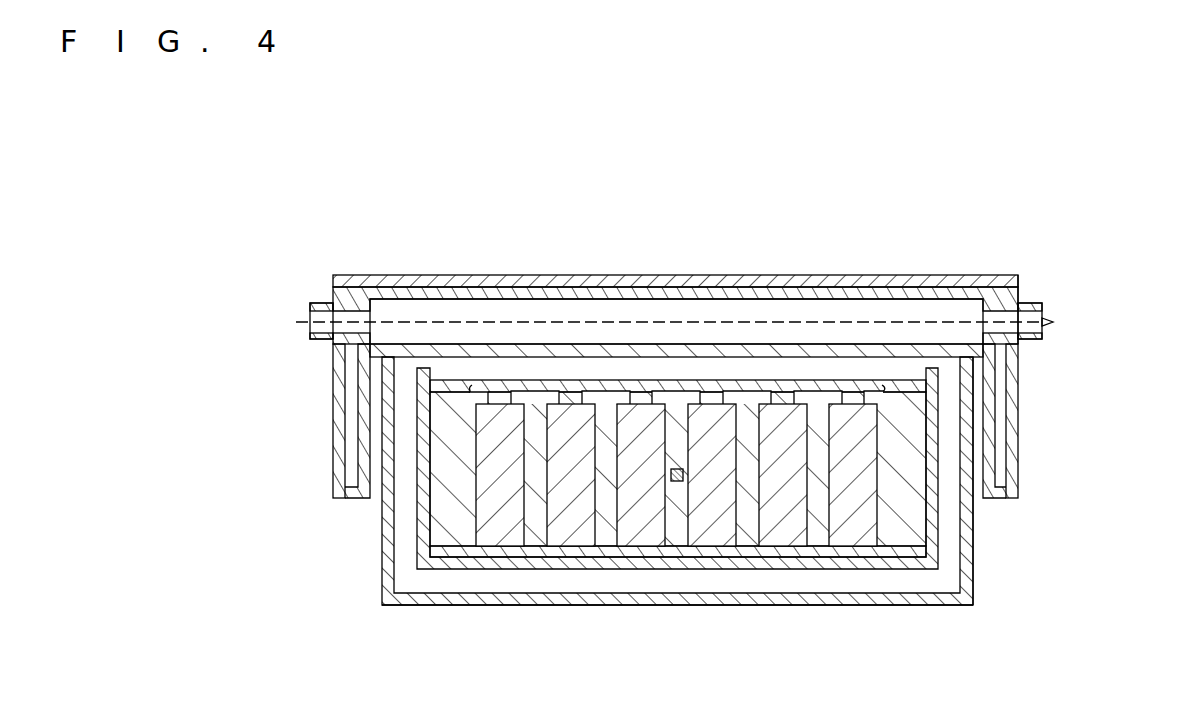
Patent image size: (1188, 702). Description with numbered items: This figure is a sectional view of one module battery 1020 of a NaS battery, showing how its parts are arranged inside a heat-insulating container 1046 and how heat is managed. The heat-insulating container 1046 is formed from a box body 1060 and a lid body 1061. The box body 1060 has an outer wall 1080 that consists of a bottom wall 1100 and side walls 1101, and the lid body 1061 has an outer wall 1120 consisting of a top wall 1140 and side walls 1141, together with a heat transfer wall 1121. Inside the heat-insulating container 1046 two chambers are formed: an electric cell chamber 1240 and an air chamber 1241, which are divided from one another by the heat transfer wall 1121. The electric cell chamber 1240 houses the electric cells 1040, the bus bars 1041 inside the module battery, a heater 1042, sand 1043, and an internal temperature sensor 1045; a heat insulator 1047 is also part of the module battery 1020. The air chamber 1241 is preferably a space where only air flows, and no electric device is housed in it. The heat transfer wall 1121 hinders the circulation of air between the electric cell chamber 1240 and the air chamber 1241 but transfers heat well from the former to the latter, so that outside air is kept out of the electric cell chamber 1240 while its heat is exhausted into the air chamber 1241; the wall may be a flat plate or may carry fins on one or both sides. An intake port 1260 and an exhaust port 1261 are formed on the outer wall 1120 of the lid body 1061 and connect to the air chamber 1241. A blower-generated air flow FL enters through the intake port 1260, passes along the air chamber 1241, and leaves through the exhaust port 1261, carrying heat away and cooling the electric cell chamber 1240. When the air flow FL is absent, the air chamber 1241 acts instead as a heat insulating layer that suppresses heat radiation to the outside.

The module battery 1020 is at (1020, 225).
The outer wall 1120 is at (222, 171).
The top wall 1140 is at (392, 283).
The side walls 1141 is at (333, 410).
The electric cell chamber 1240 is at (438, 363).
The air chamber 1241 is at (508, 308).
The heat transfer wall 1121 is at (593, 345).
The air flow FL is at (775, 318).
The intake port 1260 is at (313, 303).
The exhaust port 1261 is at (1028, 338).
The heat insulator 1047 is at (1018, 278).
The heat-insulating container 1046 is at (223, 463).
The lid body 1061 is at (333, 478).
The box body 1060 is at (382, 547).
The outer wall 1080 is at (1082, 607).
The side walls 1101 is at (972, 582).
The bottom wall 1100 is at (923, 605).
The heater 1042 is at (915, 543).
The sand 1043 is at (848, 380).
The bus bars 1041 is at (665, 393).
The electric cells 1040 is at (619, 505).
The internal temperature sensor 1045 is at (680, 481).